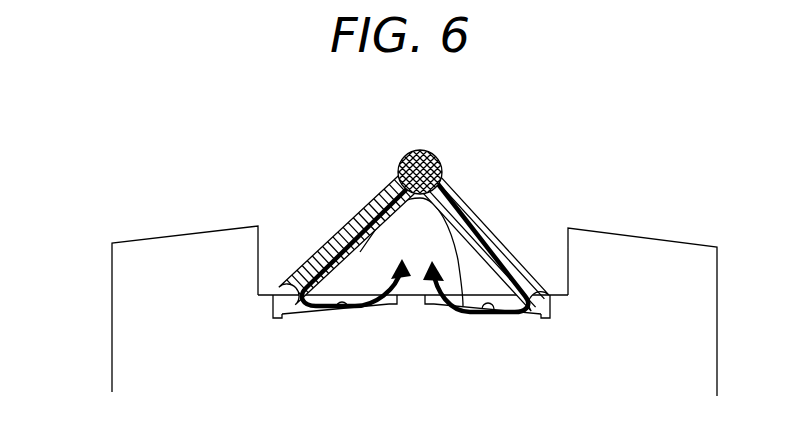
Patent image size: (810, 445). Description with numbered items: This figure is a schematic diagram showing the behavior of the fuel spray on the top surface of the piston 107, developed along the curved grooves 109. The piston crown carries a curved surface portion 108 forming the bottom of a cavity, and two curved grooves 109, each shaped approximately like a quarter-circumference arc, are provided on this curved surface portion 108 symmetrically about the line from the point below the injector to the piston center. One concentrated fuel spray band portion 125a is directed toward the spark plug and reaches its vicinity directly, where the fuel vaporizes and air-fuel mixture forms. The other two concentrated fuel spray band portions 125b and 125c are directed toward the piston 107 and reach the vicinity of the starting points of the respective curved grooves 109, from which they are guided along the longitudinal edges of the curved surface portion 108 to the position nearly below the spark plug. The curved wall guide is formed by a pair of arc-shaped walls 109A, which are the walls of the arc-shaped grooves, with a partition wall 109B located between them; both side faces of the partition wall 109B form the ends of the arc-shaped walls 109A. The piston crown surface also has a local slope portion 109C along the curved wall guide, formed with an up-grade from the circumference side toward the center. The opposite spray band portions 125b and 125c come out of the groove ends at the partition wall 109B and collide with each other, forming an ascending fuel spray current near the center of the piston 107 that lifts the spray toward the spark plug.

The piston 107 is at (162, 237).
The curved surface portion 108 is at (568, 267).
The curved groove 109 is at (365, 305).
The arc-shaped wall 109A is at (283, 318).
The partition wall 109B is at (427, 306).
The local slope portion 109C is at (337, 313).
The fuel spray band portion 125a is at (433, 152).
The fuel spray band portion 125b is at (330, 245).
The fuel spray band portion 125c is at (478, 212).